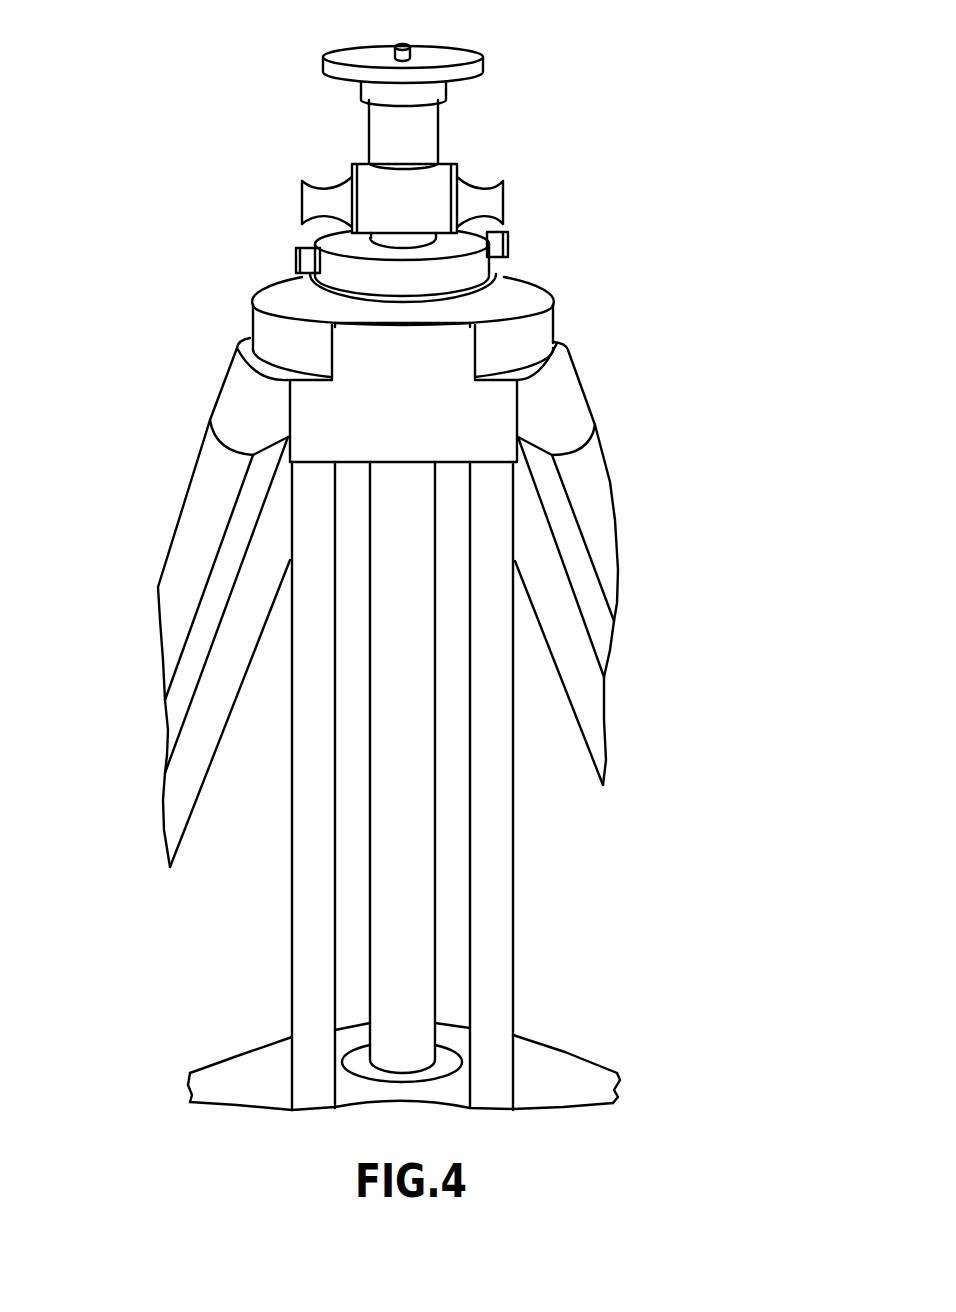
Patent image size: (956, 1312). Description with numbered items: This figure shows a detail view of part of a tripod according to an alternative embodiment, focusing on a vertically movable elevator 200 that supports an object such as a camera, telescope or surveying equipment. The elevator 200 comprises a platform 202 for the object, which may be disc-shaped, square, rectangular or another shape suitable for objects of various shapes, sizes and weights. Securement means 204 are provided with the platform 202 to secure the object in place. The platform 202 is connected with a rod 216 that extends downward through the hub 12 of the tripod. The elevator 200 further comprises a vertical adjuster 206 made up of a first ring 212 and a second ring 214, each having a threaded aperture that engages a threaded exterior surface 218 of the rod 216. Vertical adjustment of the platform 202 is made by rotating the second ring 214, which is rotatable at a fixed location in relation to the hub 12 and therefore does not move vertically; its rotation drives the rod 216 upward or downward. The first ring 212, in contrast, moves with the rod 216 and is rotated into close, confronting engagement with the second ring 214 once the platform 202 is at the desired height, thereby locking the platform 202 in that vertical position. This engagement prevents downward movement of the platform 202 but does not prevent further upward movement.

The vertically movable elevator 200 is at (100, 51).
The platform 202 is at (457, 53).
The securement means 204 is at (405, 46).
The vertical adjuster 206 is at (257, 107).
The threaded exterior surface 218 is at (438, 127).
The first ring 212 is at (503, 195).
The second ring 214 is at (508, 243).
The hub 12 is at (553, 303).
The rod 216 is at (418, 905).